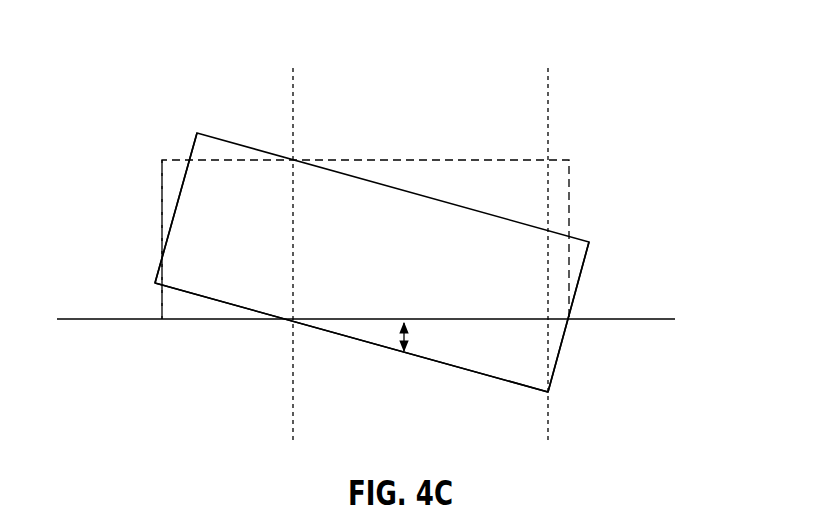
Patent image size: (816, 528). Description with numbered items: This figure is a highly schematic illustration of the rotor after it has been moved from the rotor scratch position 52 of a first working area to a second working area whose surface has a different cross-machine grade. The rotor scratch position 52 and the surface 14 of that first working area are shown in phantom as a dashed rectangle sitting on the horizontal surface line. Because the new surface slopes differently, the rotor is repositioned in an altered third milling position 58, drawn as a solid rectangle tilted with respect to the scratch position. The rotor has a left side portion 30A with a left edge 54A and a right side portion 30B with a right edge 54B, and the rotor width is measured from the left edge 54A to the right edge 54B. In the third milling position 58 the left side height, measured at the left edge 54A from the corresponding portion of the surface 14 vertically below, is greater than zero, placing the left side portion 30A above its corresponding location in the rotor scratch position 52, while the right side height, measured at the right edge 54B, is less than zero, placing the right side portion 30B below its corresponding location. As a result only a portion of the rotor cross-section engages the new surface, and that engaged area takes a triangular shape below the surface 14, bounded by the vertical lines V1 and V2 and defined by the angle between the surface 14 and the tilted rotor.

The surface 14 is at (647, 320).
The left side portion 30A is at (159, 195).
The right side portion 30B is at (589, 293).
The rotor scratch position 52 is at (382, 158).
The third milling position 58 is at (472, 209).
The left edge 54A is at (155, 283).
The right edge 54B is at (548, 392).
The vertical line V1 is at (293, 83).
The vertical line V2 is at (548, 100).